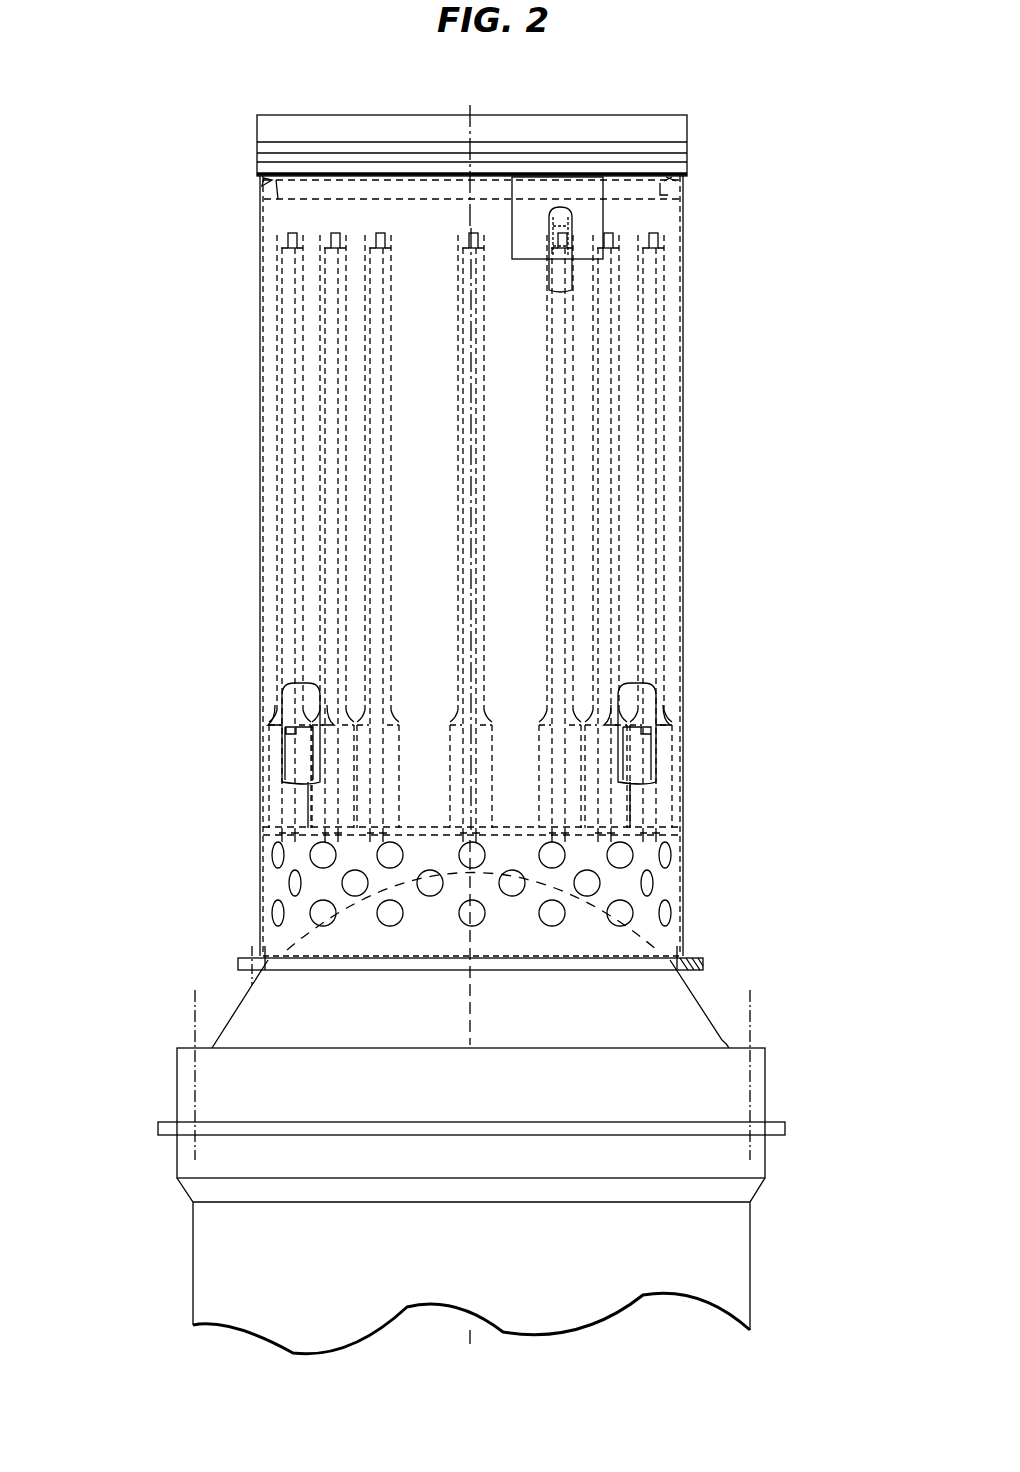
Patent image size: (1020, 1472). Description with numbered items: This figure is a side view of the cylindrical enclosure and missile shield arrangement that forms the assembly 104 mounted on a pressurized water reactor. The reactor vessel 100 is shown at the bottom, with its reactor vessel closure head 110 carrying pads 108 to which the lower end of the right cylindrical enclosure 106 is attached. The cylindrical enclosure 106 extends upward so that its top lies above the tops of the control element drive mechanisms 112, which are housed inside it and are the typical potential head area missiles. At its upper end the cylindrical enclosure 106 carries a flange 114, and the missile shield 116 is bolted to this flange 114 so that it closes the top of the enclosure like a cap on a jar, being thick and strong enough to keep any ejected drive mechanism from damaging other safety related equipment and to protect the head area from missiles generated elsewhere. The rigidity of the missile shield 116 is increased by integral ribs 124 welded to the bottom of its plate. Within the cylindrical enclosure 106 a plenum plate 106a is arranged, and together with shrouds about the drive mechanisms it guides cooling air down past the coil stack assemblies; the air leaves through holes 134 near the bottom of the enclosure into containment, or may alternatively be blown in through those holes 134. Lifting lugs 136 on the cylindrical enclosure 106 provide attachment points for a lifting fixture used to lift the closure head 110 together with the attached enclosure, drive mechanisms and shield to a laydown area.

The reactor vessel 100 is at (213, 1256).
The assembly 104 is at (186, 181).
The cylindrical enclosure 106 is at (258, 405).
The plenum plate 106a is at (430, 828).
The pads 108 is at (240, 990).
The reactor vessel closure head 110 is at (250, 1032).
The control element drive mechanisms 112 is at (320, 565).
The flange 114 is at (262, 183).
The missile shield 116 is at (522, 126).
The integral ribs 124 is at (652, 198).
The holes 134 is at (272, 913).
The lifting lugs 136 is at (572, 219).